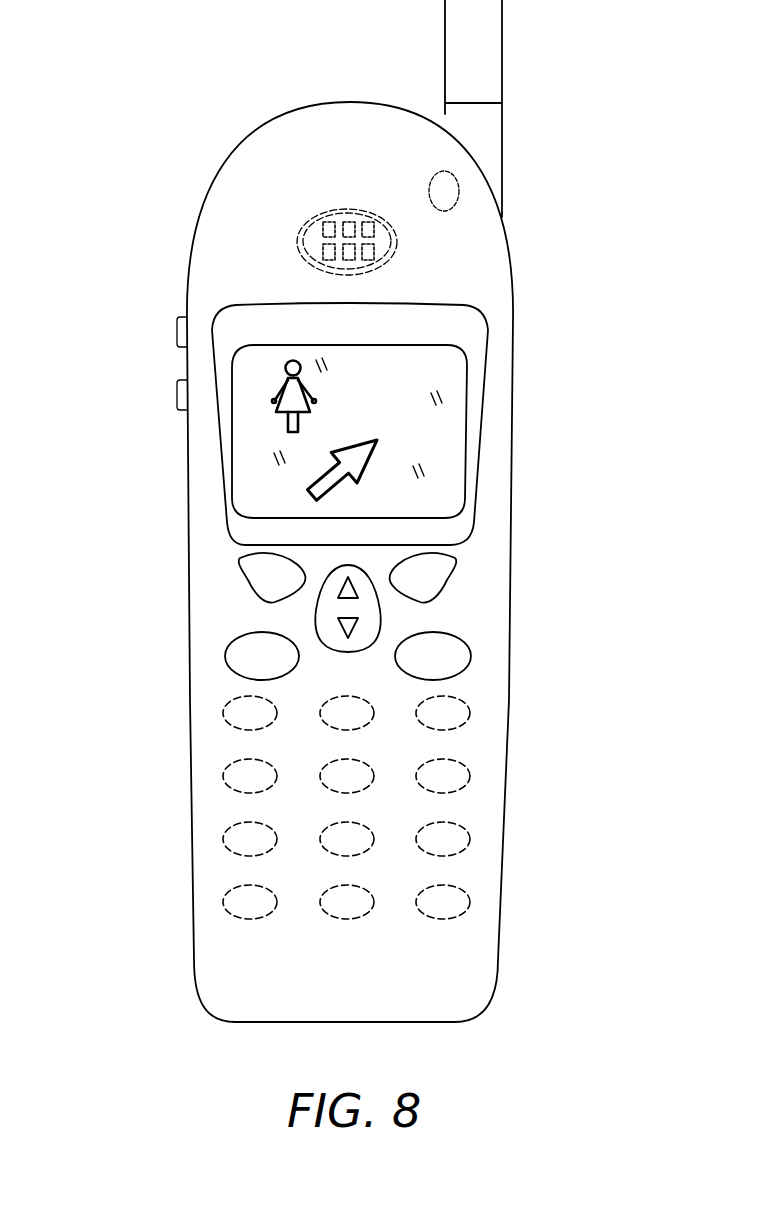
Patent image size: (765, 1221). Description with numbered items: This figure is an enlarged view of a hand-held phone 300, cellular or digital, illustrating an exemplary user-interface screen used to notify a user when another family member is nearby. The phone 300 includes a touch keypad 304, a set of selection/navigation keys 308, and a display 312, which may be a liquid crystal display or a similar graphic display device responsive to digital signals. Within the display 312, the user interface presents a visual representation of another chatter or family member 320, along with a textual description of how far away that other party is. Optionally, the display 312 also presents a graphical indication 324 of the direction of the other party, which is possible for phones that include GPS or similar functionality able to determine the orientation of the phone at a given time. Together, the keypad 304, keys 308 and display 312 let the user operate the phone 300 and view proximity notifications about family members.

The hand-held phone 300 is at (160, 623).
The touch keypad 304 is at (524, 691).
The selection/navigation keys 308 is at (524, 543).
The display 312 is at (467, 442).
The visual representation of another chatter or family member 320 is at (280, 407).
The graphical indication of the direction of the other party 324 is at (317, 487).